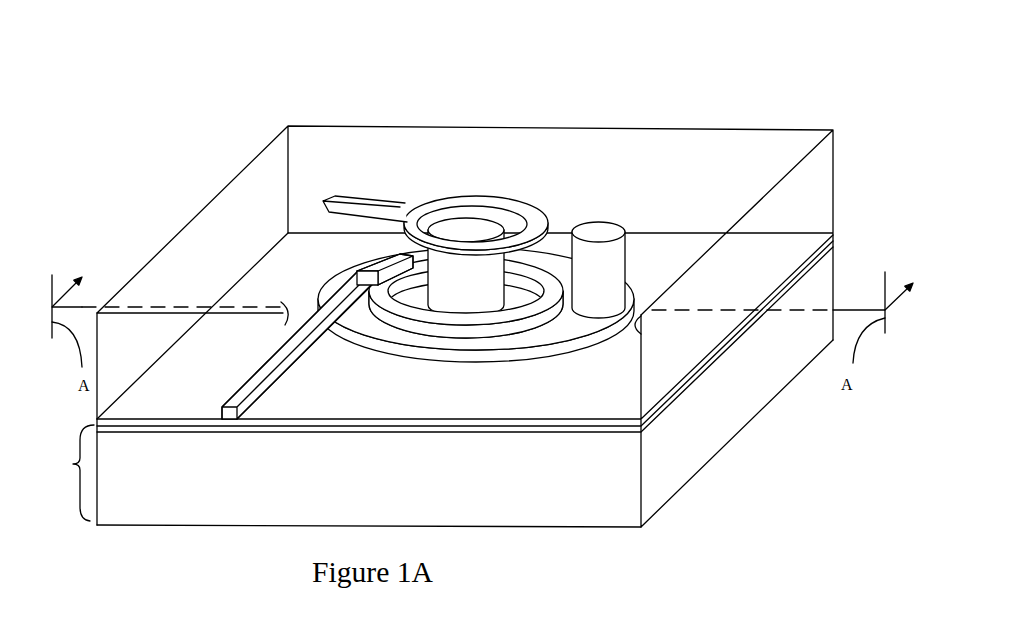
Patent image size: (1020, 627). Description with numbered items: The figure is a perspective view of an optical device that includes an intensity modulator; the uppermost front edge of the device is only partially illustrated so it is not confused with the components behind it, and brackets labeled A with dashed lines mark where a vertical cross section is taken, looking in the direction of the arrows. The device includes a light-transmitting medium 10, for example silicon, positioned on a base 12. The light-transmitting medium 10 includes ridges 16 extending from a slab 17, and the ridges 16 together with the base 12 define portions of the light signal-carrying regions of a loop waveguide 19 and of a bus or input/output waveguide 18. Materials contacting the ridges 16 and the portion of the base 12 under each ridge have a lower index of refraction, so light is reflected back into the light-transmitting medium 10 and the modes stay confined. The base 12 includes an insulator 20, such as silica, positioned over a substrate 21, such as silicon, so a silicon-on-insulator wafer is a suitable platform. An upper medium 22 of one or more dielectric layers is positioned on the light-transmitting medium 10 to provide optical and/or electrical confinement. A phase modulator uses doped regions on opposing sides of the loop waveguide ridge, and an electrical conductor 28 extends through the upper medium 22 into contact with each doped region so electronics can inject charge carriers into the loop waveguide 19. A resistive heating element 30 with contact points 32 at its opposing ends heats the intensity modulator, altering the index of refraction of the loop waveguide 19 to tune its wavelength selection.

The light-transmitting medium 10 is at (97, 419).
The base 12 is at (438, 381).
The ridge 16 is at (241, 389).
The slab 17 is at (155, 392).
The coupling gap 18 is at (317, 298).
The loop waveguide 19 is at (430, 346).
The insulator 20 is at (155, 429).
The substrate 21 is at (179, 507).
The upper medium 22 is at (609, 152).
The electrical conductor 28 is at (468, 223).
The resistive heating element 30 is at (450, 196).
The contact point 32 is at (341, 197).